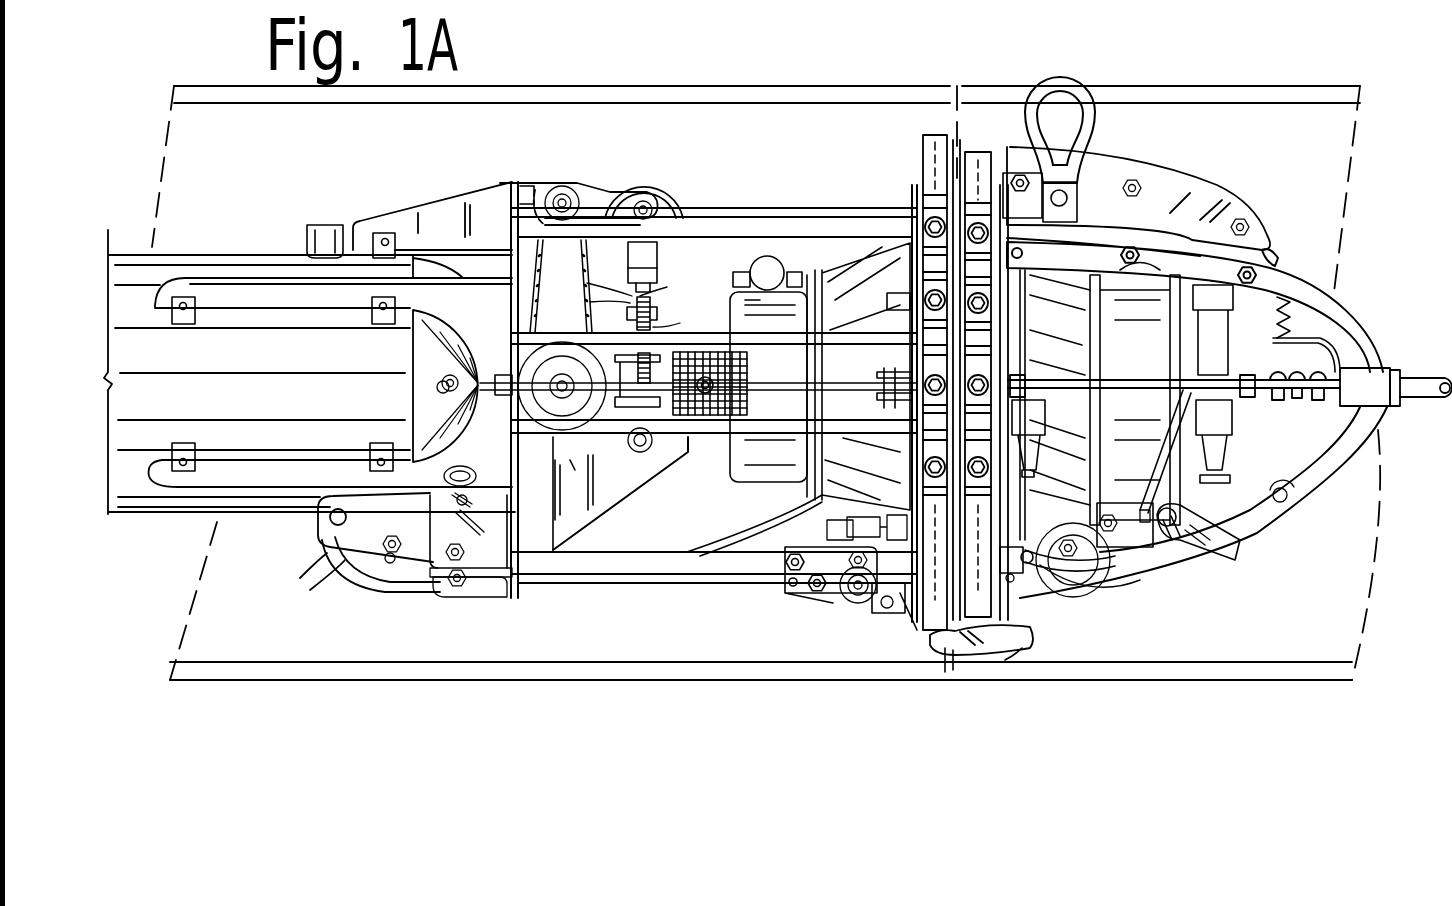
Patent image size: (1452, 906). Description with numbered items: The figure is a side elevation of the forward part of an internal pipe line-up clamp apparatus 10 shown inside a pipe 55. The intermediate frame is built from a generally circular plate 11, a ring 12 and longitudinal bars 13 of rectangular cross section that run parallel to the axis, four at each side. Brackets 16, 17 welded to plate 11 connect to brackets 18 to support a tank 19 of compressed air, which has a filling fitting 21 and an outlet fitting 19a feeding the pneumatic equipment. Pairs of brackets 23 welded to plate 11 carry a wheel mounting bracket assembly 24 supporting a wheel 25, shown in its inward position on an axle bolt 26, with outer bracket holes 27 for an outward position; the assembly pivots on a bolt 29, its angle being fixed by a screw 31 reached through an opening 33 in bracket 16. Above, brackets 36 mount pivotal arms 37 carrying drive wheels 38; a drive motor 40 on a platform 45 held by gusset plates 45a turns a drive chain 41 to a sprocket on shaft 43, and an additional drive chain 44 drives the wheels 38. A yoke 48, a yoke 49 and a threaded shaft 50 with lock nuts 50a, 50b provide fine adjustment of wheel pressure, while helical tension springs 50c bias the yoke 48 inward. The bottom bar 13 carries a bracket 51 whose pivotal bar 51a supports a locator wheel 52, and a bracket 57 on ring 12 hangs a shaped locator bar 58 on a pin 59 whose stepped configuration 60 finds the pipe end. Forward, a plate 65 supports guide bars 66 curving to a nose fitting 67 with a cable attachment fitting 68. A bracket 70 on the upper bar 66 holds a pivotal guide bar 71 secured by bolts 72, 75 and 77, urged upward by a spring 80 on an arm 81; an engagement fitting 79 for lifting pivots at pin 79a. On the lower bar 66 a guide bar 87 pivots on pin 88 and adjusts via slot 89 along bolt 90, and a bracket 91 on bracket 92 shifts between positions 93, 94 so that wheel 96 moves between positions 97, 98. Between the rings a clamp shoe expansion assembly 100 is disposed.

The internal pipe line-up clamp apparatus 10 is at (693, 608).
The circular plate 11 is at (517, 592).
The ring 12 is at (908, 197).
The longitudinal bars 13 is at (773, 210).
The bracket 16 is at (272, 280).
The bracket 17 is at (440, 203).
The brackets 18 is at (382, 233).
The tank 19 is at (210, 256).
The outlet fitting 19a is at (440, 387).
The fitting 21 is at (320, 226).
The brackets 23 is at (492, 577).
The wheel mounting bracket assembly 24 is at (317, 565).
The wheel 25 is at (377, 592).
The axle bolt or shaft 26 is at (380, 540).
The outer bracket holes 27 is at (393, 562).
The bolt 29 is at (453, 584).
The screw 31 is at (467, 502).
The opening 33 is at (447, 473).
The brackets 36 is at (542, 182).
The pivotal arms 37 is at (588, 183).
The drive wheels 38 is at (663, 170).
The drive motor 40 is at (600, 410).
The drive chain 41 is at (537, 248).
The shaft 43 is at (530, 194).
The additional drive chain 44 is at (640, 160).
The platform 45 is at (538, 443).
The gusset plates 45a is at (600, 515).
The U-shaped bracket or yoke 48 is at (627, 262).
The yoke 49 is at (633, 308).
The threaded shaft 50 is at (667, 287).
The lock nut 50a is at (590, 302).
The lock nut 50b is at (587, 283).
The helical tension springs 50c is at (685, 323).
The bracket 51 is at (797, 597).
The pivotal bar 51a is at (818, 604).
The locator wheel 52 is at (858, 603).
The pipe 55 is at (822, 86).
The bracket 57 is at (902, 620).
The shaped locator bar 58 is at (1008, 652).
The connection pin or bolt 59 is at (882, 613).
The stepped configuration 60 is at (942, 650).
The plate 65 is at (1000, 587).
The guide bars 66 is at (1387, 362).
The nose fitting 67 is at (1385, 410).
The cable attachment fitting 68 is at (1422, 404).
The bracket 70 is at (1250, 223).
The pivotal guide bar 71 is at (1130, 160).
The bolt 72 is at (1250, 227).
The bolt 75 is at (1140, 182).
The bolt 77 is at (1015, 175).
The engagement fitting 79 is at (1095, 118).
The pin 79a is at (1104, 183).
The helical tension spring 80 is at (1302, 318).
The arm 81 is at (1325, 345).
The guide bar 87 is at (1258, 533).
The pin or bolt 88 is at (1285, 502).
The slot 89 is at (1160, 548).
The bolt 90 is at (1163, 538).
The bracket 91 is at (1108, 560).
The bracket 92 is at (1030, 595).
The bolt hole position 93 is at (1122, 560).
The bolt hole position 94 is at (1173, 562).
The wheel 96 is at (1088, 597).
The axle bolt position 97 is at (1073, 580).
The axle bolt position 98 is at (1115, 585).
The clamp shoe expansion assembly 100 is at (767, 501).